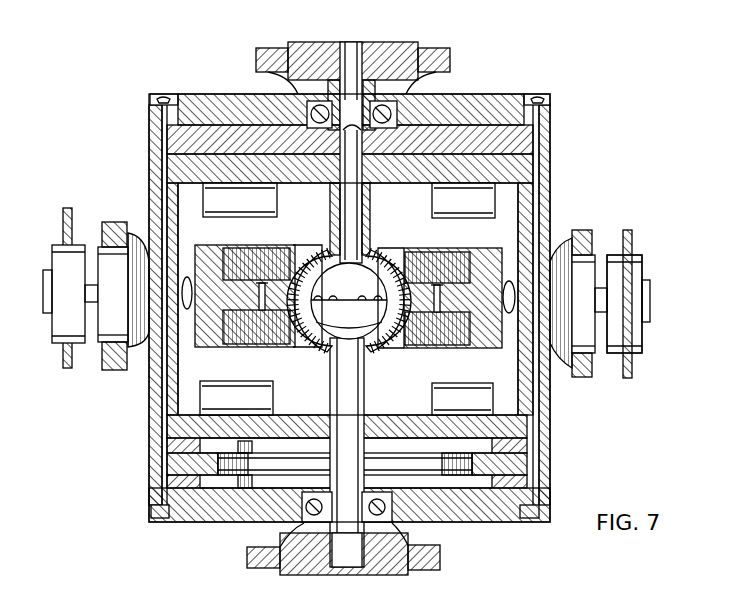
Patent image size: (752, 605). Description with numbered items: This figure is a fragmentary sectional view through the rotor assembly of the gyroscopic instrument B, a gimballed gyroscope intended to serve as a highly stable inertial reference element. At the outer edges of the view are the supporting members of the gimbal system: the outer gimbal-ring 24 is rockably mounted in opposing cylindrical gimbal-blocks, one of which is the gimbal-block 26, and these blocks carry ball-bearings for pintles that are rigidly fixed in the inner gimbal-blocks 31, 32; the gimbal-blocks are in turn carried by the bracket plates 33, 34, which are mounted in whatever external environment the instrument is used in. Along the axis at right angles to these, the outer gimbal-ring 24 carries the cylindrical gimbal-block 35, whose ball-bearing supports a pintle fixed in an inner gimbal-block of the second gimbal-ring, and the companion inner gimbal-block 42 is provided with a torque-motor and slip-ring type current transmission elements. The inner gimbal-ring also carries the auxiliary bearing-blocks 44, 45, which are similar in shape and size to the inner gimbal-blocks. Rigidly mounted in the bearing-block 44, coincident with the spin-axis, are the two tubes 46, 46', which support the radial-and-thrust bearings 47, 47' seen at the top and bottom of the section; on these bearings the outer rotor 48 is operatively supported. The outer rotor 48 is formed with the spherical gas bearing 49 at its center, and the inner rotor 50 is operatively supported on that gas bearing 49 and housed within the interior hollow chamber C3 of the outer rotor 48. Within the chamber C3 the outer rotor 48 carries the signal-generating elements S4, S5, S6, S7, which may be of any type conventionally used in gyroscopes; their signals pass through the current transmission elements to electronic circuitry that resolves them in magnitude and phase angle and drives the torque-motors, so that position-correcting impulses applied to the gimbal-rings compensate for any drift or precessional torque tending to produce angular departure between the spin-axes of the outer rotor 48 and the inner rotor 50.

The gyroscopic instrument B is at (150, 88).
The outer gimbal-ring 24 is at (589, 232).
The gimbal-block 26 is at (641, 346).
The inner gimbal-block 31 is at (148, 334).
The inner gimbal-block 32 is at (593, 262).
The bracket plate 33 is at (63, 370).
The bracket plate 34 is at (628, 378).
The cylindrical gimbal-block 35 is at (80, 346).
The inner gimbal-block 42 is at (450, 52).
The auxiliary bearing-block 44 is at (380, 46).
The auxiliary bearing-block 45 is at (320, 572).
The tube 46 is at (317, 73).
The tube 46' is at (384, 545).
The radial-and-thrust bearing 47 is at (440, 90).
The radial-and-thrust bearing 47' is at (273, 528).
The outer rotor 48 is at (552, 156).
The spherical gas bearing 49 is at (368, 256).
The inner rotor 50 is at (550, 262).
The interior hollow chamber C3 is at (513, 213).
The signal-generating element S4 is at (296, 234).
The signal-generating element S5 is at (450, 245).
The signal-generating element S6 is at (258, 384).
The signal-generating element S7 is at (396, 377).